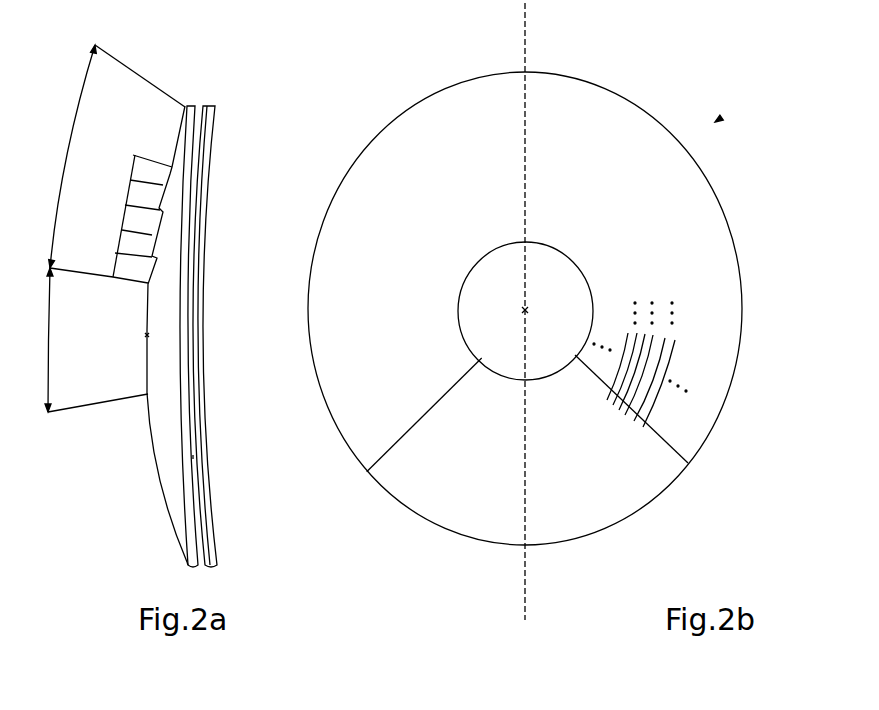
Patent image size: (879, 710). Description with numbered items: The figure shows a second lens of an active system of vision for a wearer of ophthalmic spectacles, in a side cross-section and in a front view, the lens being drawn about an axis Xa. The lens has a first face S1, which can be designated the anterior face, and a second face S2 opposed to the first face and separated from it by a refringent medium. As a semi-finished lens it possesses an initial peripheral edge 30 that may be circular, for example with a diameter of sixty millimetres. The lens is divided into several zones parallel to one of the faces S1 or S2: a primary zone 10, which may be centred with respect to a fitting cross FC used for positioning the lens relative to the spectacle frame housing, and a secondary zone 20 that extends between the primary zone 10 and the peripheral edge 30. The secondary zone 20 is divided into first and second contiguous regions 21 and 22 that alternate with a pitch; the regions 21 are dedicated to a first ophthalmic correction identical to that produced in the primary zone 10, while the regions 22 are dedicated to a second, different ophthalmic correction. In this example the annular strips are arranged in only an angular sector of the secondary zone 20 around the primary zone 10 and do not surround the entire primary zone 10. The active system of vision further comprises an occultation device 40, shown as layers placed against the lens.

In FIG. 2A, the primary zone 10 is at (85, 340).
In FIG. 2B, the primary zone 10 is at (535, 282).
In FIG. 2A, the secondary zone 20 is at (113, 156).
In FIG. 2B, the secondary zone 20 is at (400, 324).
In FIG. 2A, the first regions 21 is at (124, 219).
In FIG. 2B, the first regions 21 is at (622, 388).
In FIG. 2A, the second regions 22 is at (135, 249).
In FIG. 2B, the second regions 22 is at (616, 362).
In FIG. 2B, the initial peripheral edge 30 is at (713, 190).
In FIG. 2A, the occultation device 40 is at (207, 230).
In FIG. 2A, the fitting cross FC is at (147, 335).
In FIG. 2B, the fitting cross FC is at (530, 314).
In FIG. 2A, the first face S1 is at (148, 465).
In FIG. 2A, the second face S2 is at (193, 457).
In FIG. 2B, the axis Xa is at (530, 15).